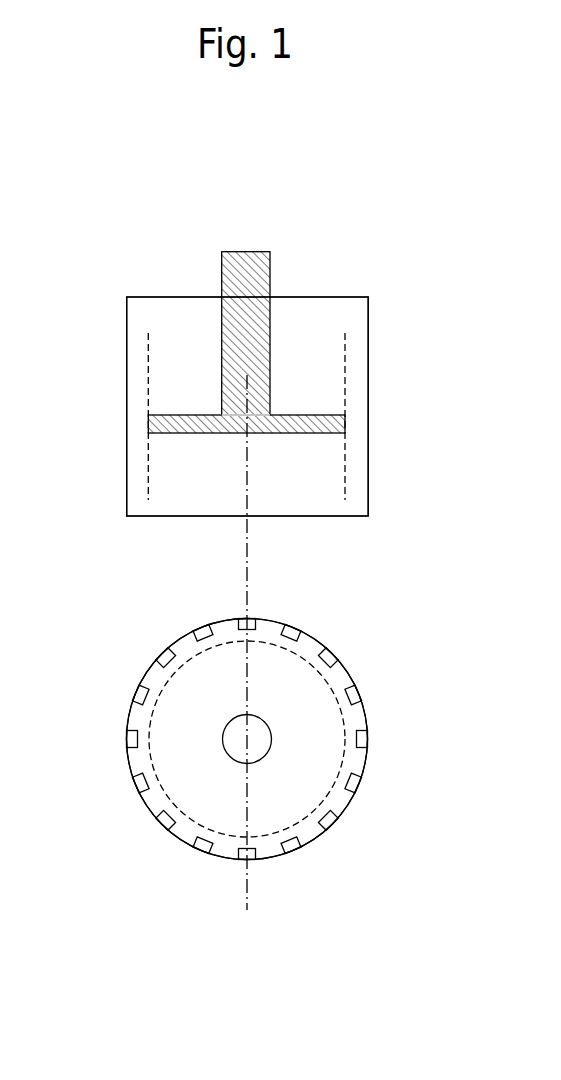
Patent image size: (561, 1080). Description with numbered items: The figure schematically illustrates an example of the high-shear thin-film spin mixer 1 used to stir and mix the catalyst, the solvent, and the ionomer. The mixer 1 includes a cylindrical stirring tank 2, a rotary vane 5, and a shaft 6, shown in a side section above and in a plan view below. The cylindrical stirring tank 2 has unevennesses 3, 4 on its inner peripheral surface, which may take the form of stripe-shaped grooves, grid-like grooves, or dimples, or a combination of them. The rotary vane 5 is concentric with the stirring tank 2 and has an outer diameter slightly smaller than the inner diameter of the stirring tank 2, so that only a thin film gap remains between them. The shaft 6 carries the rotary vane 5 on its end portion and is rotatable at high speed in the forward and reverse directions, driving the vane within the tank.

The high-shear thin-film spin mixer 1 is at (372, 244).
The cylindrical stirring tank 2 is at (127, 405).
The unevenness 3 is at (152, 673).
The unevenness 4 is at (127, 737).
The rotary vane 5 is at (345, 379).
The shaft 6 is at (252, 278).